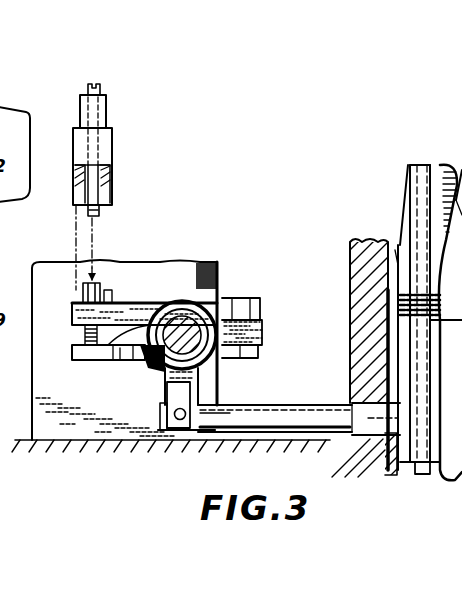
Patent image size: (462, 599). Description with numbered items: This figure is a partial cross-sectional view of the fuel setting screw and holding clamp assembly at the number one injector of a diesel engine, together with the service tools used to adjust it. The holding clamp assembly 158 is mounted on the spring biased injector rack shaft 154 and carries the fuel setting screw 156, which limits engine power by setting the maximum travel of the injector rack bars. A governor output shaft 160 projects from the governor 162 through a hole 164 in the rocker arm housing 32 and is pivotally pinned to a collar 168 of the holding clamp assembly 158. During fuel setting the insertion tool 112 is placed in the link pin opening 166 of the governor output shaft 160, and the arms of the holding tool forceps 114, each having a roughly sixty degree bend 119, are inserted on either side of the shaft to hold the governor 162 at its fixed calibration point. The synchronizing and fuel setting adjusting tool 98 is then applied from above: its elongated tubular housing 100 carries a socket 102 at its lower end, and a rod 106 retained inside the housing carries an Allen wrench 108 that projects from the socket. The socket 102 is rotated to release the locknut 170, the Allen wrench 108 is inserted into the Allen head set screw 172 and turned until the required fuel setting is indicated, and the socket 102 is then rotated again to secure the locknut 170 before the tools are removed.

The rocker arm housing 32 is at (350, 253).
The synchronizing and fuel setting adjusting tool 98 is at (134, 125).
The elongated tubular housing 100 is at (106, 100).
The socket 102 is at (110, 162).
The rod 106 is at (86, 84).
The Allen wrench 108 is at (103, 213).
The insertion tool 112 is at (412, 170).
The holding tool forceps 114 is at (446, 168).
The bend 119 is at (406, 248).
The injector rack shaft 154 is at (183, 328).
The fuel setting screw 156 is at (74, 338).
The holding clamp assembly 158 is at (234, 282).
The governor output shaft 160 is at (276, 418).
The governor 162 is at (455, 480).
The hole 164 is at (353, 460).
The link pin opening 166 is at (0, 468).
The collar 168 is at (150, 316).
The locknut 170 is at (83, 298).
The Allen head set screw 172 is at (109, 290).